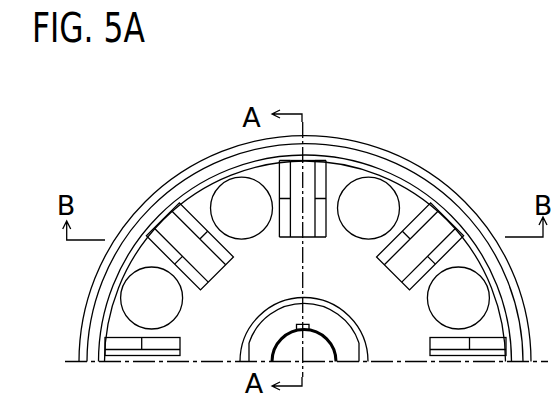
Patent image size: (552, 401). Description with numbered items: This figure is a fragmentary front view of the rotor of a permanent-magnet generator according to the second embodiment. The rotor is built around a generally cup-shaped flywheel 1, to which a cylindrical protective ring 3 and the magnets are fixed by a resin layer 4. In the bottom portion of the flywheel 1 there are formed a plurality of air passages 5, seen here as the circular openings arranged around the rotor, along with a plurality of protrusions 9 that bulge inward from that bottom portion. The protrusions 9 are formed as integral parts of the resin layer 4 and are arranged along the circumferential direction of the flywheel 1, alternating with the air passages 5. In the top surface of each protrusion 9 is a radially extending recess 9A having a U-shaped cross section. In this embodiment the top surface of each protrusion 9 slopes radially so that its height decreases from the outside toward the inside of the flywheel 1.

The flywheel 1 is at (162, 196).
The protective ring 3 is at (230, 172).
The resin layer 4 is at (205, 177).
The air passages 5 is at (372, 203).
The protrusions 9 is at (322, 163).
The recess 9A is at (306, 175).